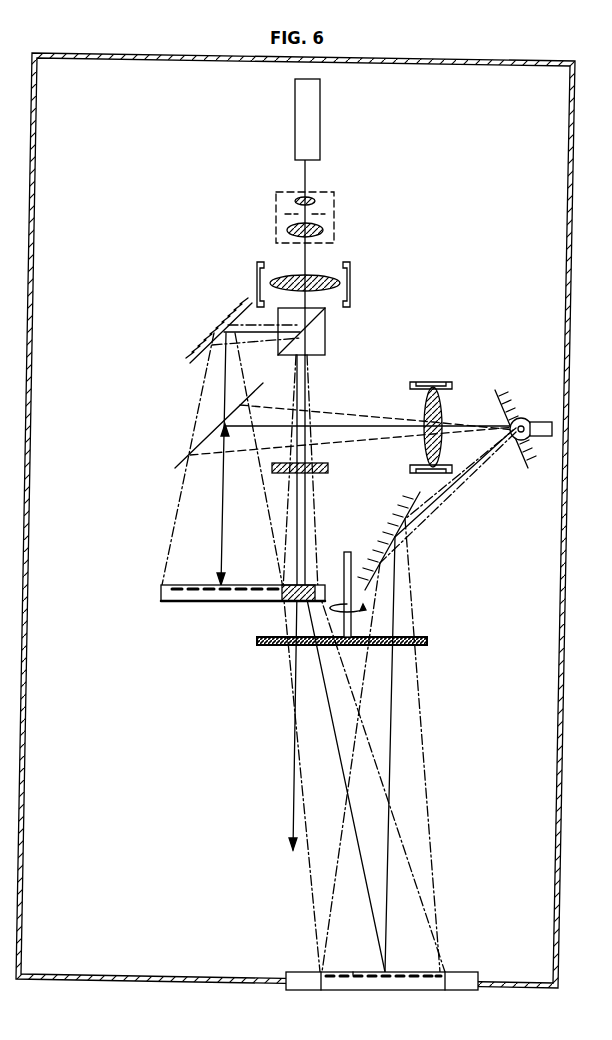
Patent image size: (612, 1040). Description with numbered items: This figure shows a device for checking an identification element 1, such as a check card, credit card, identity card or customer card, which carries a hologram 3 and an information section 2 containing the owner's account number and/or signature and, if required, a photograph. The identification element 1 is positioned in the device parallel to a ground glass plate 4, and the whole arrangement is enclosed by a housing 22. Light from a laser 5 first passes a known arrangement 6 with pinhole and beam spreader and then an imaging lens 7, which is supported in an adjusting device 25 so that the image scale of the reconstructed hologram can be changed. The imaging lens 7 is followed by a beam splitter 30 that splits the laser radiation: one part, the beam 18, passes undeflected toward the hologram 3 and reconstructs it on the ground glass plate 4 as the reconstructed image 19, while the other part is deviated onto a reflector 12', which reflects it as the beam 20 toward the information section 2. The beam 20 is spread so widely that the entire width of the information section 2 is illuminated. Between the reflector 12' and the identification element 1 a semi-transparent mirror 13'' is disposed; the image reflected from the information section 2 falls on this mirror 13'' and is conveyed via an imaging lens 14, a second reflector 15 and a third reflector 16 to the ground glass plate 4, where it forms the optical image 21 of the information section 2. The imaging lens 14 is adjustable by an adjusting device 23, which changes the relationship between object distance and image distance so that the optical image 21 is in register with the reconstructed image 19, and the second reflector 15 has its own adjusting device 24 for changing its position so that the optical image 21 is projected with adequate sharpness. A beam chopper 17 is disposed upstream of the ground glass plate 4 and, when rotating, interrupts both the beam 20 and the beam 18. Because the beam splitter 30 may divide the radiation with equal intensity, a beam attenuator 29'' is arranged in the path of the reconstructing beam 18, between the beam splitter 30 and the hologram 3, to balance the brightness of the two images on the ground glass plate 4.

The identification element 1 is at (180, 600).
The information section 2 is at (190, 583).
The hologram 3 is at (287, 603).
The ground glass plate 4 is at (300, 980).
The laser 5 is at (318, 124).
The arrangement with pinhole and beam spreader 6 is at (334, 212).
The imaging lens 7 is at (308, 277).
The reflector 12' is at (217, 330).
The semi-transparent mirror 13'' is at (198, 425).
The imaging lens 14 is at (441, 407).
The second reflector 15 is at (509, 404).
The third reflector 16 is at (398, 525).
The beam chopper 17 is at (400, 648).
The beam 18 is at (295, 528).
The reconstructed image 19 is at (355, 978).
The beam 20 is at (240, 530).
The optical image 21 is at (355, 972).
The housing 22 is at (553, 765).
The adjusting device 23 is at (426, 382).
The adjusting device 24 is at (535, 420).
The adjusting device 25 is at (350, 305).
The beam attenuator 29'' is at (325, 459).
The beam splitter 30 is at (320, 337).